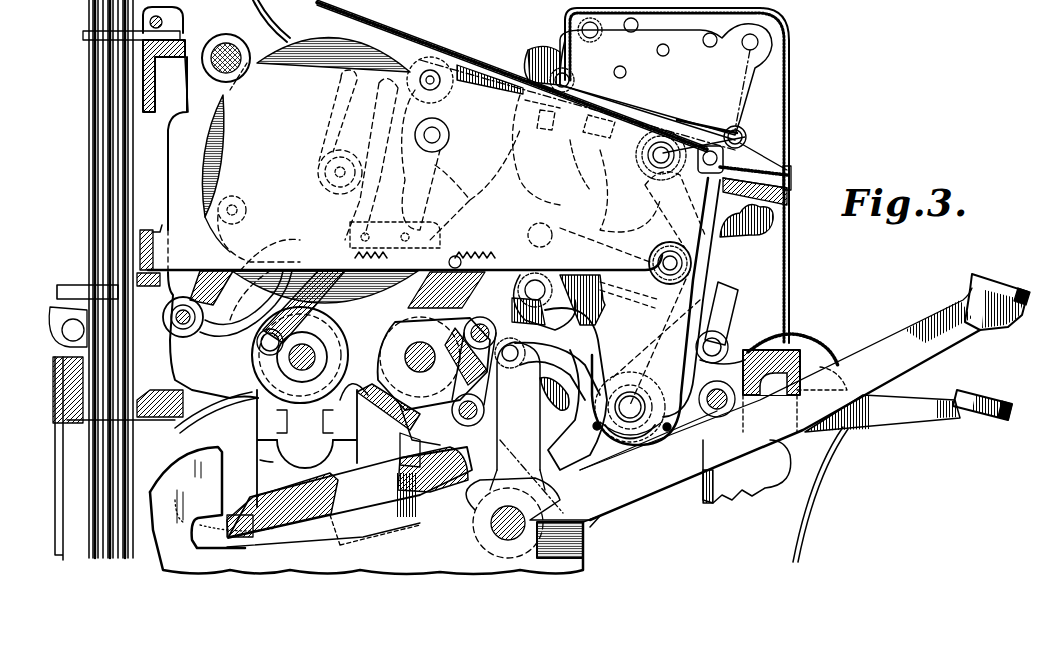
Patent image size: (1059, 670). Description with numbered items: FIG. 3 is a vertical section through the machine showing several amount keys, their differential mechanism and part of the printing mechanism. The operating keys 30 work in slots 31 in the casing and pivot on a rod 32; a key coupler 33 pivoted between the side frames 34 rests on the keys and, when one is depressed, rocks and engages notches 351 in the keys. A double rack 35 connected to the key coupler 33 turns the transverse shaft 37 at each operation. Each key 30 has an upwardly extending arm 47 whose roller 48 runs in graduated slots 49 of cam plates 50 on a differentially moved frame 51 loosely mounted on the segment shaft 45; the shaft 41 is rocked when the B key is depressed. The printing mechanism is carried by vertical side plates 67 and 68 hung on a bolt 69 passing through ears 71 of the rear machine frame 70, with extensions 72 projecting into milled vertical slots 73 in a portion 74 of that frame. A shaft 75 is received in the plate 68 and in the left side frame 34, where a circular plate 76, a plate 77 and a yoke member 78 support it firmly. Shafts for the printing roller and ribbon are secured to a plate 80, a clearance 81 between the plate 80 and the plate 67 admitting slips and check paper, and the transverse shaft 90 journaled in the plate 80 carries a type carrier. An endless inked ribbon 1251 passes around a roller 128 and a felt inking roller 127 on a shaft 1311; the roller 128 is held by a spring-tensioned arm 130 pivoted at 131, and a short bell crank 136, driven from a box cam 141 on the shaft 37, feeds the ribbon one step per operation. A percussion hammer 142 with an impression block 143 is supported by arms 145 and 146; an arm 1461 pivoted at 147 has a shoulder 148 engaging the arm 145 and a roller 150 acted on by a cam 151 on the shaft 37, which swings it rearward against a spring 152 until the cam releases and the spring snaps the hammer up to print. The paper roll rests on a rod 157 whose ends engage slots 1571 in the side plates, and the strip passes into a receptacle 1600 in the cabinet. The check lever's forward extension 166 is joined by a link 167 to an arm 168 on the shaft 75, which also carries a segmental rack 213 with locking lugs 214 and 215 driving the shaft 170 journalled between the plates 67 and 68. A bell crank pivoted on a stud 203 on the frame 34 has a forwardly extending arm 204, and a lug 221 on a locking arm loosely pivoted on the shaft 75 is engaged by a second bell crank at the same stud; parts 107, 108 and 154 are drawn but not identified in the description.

The operating keys 30 is at (972, 392).
The slots 31 is at (805, 525).
The rod 32 is at (590, 530).
The key coupler 33 is at (349, 497).
The side frames 34 is at (190, 427).
The double rack 35 is at (273, 462).
The notches 351 is at (205, 532).
The transverse shaft 37 is at (258, 400).
The shaft 41 is at (718, 410).
The segment shaft 45 is at (412, 355).
The upwardly extending arm 47 is at (507, 415).
The roller 48 is at (530, 356).
The graduated slots 49 is at (560, 395).
The cam plates 50 is at (576, 389).
The differentially moved frame 51 is at (393, 426).
The vertical side plate 67 is at (405, 207).
The vertical side plate 68 is at (670, 271).
The bolt 69 is at (226, 48).
The rear supporting machine frame 70 is at (156, 202).
The ears 71 is at (188, 78).
The extensions 72 is at (160, 250).
The milled vertical slots 73 is at (162, 226).
The portion of the machine frame 74 is at (158, 278).
The shaft 75 is at (630, 407).
The circular plate 76 is at (666, 422).
The plate 77 is at (641, 428).
The yoke member 78 is at (625, 435).
The plate 80 is at (666, 79).
The clearance 81 is at (668, 125).
The transverse shaft 90 is at (627, 74).
The stud 107 is at (190, 328).
The arm 108 is at (241, 303).
The inking roller 127 is at (790, 42).
The roller 128 is at (567, 26).
The arm 130 is at (593, 38).
The pivot 131 is at (553, 72).
The short bell crank 136 is at (340, 40).
The box cam 141 is at (345, 332).
The percussion hammer 142 is at (591, 165).
The impression block 143 is at (612, 130).
The arm 145 is at (544, 150).
The arm 146 is at (413, 200).
The pivot 147 is at (425, 140).
The shoulder 148 is at (478, 195).
The roller 150 is at (285, 350).
The cam 151 is at (326, 425).
The spring 152 is at (510, 240).
The hole 154 is at (669, 52).
The rod 157 is at (322, 180).
The forward extension 166 is at (625, 229).
The link 167 is at (573, 240).
The arm 168 is at (790, 340).
The shaft 170 is at (745, 138).
The stud 203 is at (524, 288).
The forwardly extending arm 204 is at (656, 311).
The segmental rack 213 is at (733, 228).
The locking lug 214 is at (727, 283).
The locking lug 215 is at (728, 326).
The lug 221 is at (578, 330).
The endless inked ribbon 1251 is at (782, 106).
The shaft 1311 is at (756, 38).
The arm 1461 is at (318, 208).
The slots 1571 is at (345, 100).
The receptacle 1600 is at (768, 187).